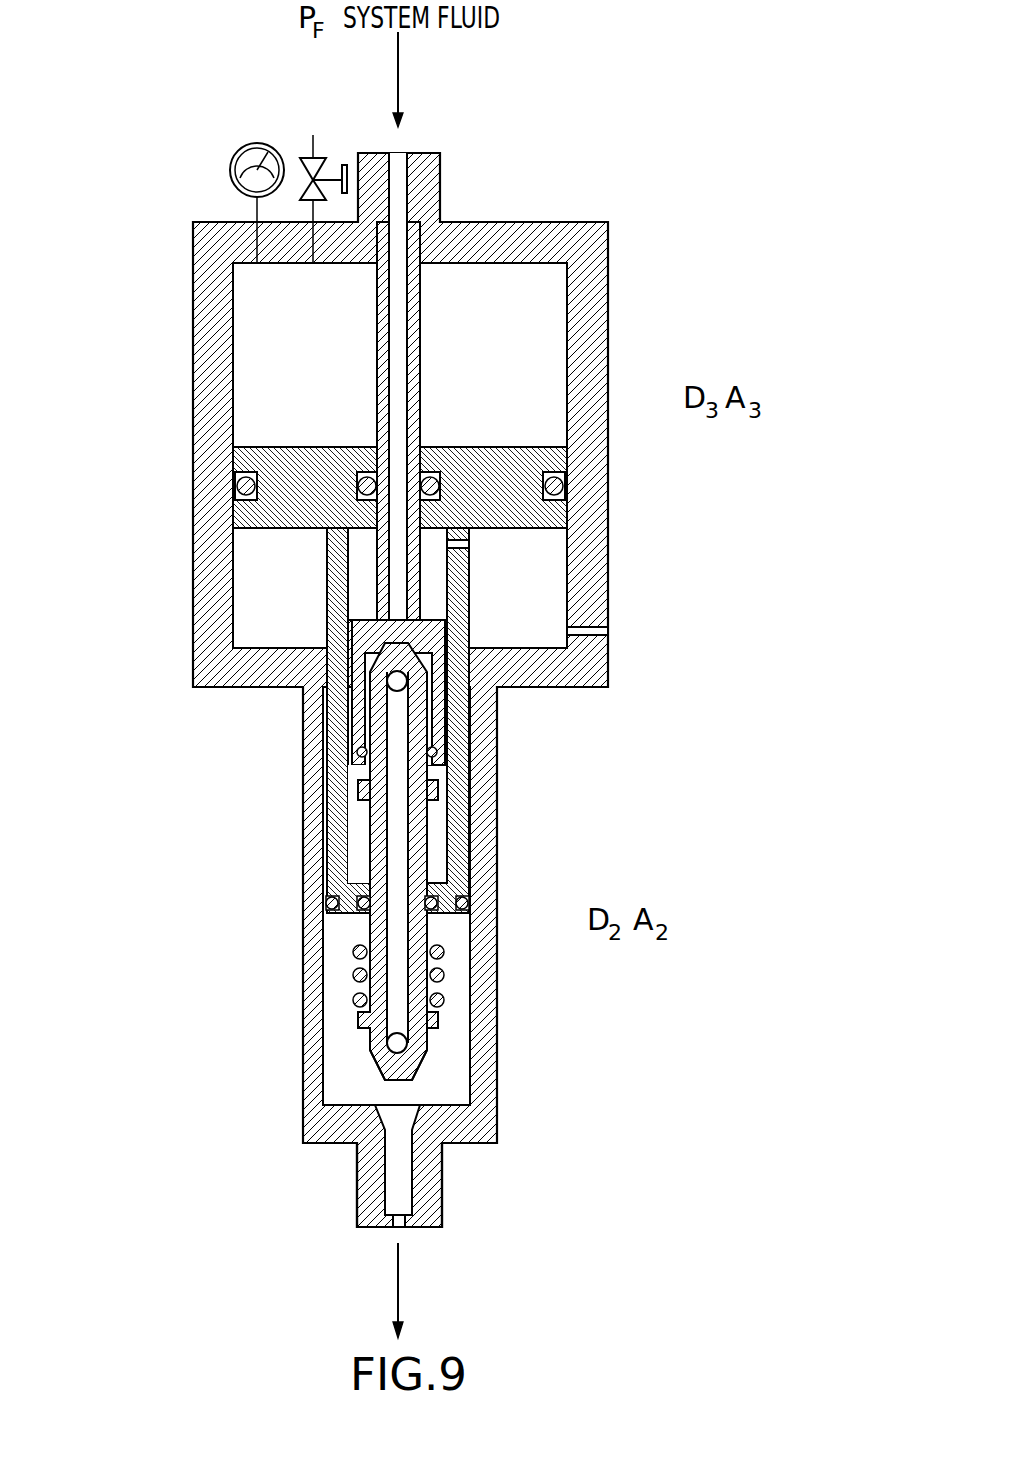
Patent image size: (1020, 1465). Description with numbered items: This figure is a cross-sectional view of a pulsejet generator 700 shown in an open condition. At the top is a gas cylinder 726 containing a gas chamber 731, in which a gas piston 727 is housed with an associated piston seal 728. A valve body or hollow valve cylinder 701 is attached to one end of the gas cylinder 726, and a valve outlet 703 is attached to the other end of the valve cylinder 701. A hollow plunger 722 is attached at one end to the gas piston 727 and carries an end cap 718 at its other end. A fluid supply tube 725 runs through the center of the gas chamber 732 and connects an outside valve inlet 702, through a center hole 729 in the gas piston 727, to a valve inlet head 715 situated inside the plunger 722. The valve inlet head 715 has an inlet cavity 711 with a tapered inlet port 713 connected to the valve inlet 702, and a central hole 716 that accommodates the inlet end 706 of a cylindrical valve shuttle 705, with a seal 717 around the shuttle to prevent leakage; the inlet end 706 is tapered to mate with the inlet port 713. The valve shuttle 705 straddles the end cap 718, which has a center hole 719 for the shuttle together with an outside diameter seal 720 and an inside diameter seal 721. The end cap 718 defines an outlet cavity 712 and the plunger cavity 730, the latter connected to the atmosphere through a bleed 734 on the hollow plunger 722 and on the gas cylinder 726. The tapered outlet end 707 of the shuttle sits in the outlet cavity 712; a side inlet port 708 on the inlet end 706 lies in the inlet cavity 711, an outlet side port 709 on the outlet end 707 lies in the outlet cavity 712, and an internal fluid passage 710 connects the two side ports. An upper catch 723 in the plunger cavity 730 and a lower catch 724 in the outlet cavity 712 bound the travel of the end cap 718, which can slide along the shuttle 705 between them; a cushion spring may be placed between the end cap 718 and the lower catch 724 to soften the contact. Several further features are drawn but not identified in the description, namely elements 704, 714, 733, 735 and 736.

The pulsejet generator 700 is at (650, 148).
The valve cylinder 701 is at (487, 852).
The valve inlet 702 is at (404, 152).
The valve outlet 703 is at (362, 1185).
The housing bore wall 704 is at (320, 730).
The valve shuttle 705 is at (360, 960).
The inlet end 706 is at (330, 655).
The outlet end 707 is at (415, 1070).
The side inlet port 708 is at (405, 681).
The outlet side port 709 is at (393, 1043).
The internal fluid passage 710 is at (398, 990).
The inlet cavity 711 is at (437, 718).
The outlet cavity 712 is at (455, 948).
The inlet port 713 is at (428, 627).
The outlet passage inlet 714 is at (370, 1113).
The valve inlet head 715 is at (352, 622).
The central hole 716 is at (445, 755).
The seal 717 is at (362, 752).
The end cap 718 is at (455, 928).
The center hole 719 is at (440, 889).
The outside diameter seal 720 is at (330, 903).
The inside diameter seal 721 is at (358, 908).
The hollow plunger 722 is at (470, 578).
The upper catch 723 is at (435, 785).
The lower catch 724 is at (438, 1020).
The fluid supply tube 725 is at (377, 355).
The gas cylinder 726 is at (585, 252).
The gas piston 727 is at (510, 450).
The piston seal 728 is at (240, 485).
The center hole 729 is at (377, 447).
The plunger cavity 730 is at (350, 825).
The gas chamber 731 is at (540, 350).
The gas chamber 732 is at (255, 578).
The piston inner seal 733 is at (430, 472).
The bleed 734 is at (455, 542).
The spring 735 is at (440, 975).
The outlet orifice 736 is at (397, 1228).